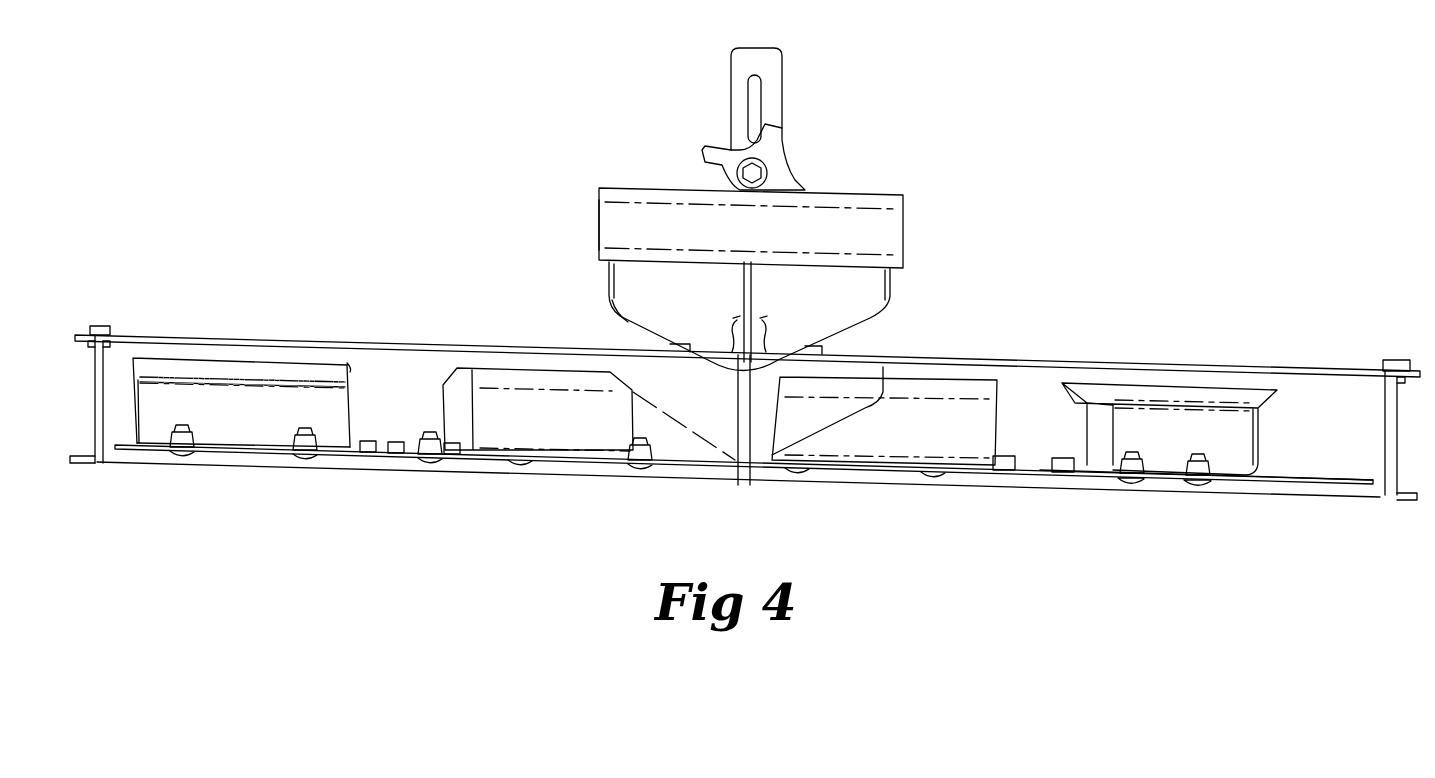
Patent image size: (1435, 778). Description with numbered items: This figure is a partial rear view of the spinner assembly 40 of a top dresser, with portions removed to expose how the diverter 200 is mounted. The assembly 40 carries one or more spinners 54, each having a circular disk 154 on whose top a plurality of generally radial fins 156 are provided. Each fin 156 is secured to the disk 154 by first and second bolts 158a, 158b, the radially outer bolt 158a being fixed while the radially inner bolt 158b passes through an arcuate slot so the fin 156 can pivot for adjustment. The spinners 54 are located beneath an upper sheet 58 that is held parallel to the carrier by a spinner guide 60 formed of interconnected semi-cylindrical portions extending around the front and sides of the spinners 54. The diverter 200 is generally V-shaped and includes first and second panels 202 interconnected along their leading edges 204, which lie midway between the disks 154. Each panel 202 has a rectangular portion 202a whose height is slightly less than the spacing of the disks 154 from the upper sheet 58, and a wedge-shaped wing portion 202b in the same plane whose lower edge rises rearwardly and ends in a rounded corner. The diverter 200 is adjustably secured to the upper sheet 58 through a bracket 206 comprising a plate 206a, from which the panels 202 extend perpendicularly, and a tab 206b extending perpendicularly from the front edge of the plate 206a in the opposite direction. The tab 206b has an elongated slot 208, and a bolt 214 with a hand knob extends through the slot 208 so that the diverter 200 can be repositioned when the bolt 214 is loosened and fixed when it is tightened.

The assembly 40 is at (258, 195).
The spinner 54 is at (462, 470).
The upper sheet 58 is at (370, 341).
The spinner guide 60 is at (262, 470).
The circular disk 154 is at (1281, 482).
The fin 156 is at (1255, 325).
The first bolt 158a is at (1197, 487).
The second bolt 158b is at (1122, 487).
The diverter 200 is at (880, 148).
The panel 202 is at (868, 286).
The rectangular portion 202a is at (793, 315).
The wing portion 202b is at (647, 313).
The leading edge 204 is at (743, 278).
The bracket 206 is at (905, 222).
The plate 206a is at (598, 218).
The tab 206b is at (782, 68).
The elongated slot 208 is at (752, 102).
The bolt 214 is at (715, 167).